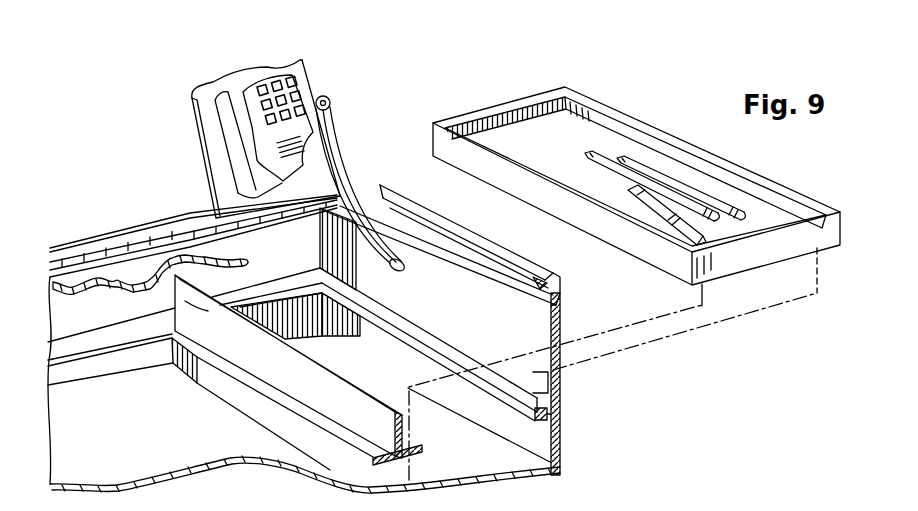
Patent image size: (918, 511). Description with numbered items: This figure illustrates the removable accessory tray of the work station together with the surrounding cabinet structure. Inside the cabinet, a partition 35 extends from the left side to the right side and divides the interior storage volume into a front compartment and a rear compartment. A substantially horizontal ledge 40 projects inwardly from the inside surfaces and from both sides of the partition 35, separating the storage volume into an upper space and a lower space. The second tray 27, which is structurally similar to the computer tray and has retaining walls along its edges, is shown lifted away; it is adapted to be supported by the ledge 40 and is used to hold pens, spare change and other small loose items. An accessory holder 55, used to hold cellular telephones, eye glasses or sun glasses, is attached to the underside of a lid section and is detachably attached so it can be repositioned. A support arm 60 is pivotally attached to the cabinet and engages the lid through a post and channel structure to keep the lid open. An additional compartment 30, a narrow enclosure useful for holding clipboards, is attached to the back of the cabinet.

The second tray 27 is at (492, 104).
The additional compartment 30 is at (484, 237).
The partition 35 is at (165, 282).
The ledge 40 is at (101, 341).
The accessory holder 55 is at (228, 119).
The support arm 60 is at (347, 134).